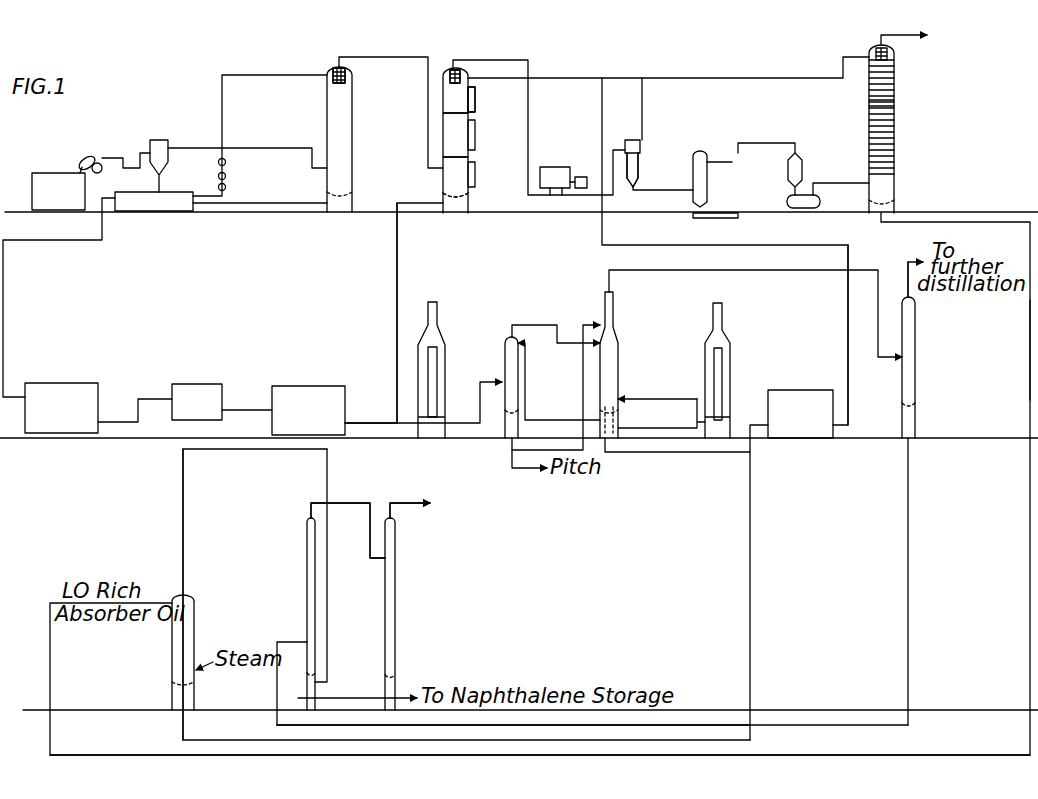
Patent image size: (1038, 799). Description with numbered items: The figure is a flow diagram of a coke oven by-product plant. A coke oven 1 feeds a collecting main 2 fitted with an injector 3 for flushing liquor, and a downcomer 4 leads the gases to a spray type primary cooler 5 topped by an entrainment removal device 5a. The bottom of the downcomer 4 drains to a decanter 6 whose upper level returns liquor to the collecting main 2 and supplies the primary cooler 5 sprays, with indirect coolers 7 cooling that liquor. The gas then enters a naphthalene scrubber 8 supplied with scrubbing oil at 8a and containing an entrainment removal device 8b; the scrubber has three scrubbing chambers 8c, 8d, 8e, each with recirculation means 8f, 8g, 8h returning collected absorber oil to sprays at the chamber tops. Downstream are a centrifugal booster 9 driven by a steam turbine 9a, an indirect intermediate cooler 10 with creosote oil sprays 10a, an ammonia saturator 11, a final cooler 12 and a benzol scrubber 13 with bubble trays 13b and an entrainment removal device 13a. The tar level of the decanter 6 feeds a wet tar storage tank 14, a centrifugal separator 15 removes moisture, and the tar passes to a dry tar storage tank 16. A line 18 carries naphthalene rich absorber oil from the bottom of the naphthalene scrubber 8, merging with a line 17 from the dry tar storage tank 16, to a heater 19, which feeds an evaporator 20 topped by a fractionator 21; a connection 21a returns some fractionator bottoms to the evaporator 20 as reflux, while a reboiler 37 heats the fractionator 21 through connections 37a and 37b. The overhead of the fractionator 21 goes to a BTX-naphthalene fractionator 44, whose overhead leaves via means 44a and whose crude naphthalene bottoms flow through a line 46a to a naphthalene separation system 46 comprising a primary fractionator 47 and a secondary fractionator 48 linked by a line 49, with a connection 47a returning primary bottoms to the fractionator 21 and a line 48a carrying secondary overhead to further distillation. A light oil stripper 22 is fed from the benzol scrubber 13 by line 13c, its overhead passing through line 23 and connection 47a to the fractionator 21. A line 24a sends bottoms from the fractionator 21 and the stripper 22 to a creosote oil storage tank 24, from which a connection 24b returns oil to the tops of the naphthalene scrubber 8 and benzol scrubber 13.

The coke oven 1 is at (58, 191).
The collecting main 2 is at (82, 161).
The injector 3 is at (100, 163).
The downcomer 4 is at (151, 150).
The primary cooler 5 is at (352, 113).
The entrainment removal device 5a is at (345, 68).
The decanter 6 is at (168, 192).
The indirect coolers 7 is at (228, 158).
The naphthalene scrubber 8 is at (446, 68).
The source of scrubbing oil 8a is at (472, 90).
The entrainment removal device 8b is at (462, 72).
The scrubbing chamber 8c is at (443, 105).
The scrubbing chamber 8d is at (443, 133).
The scrubbing chamber 8e is at (443, 178).
The recirculation means 8f is at (475, 108).
The recirculation means 8g is at (475, 138).
The recirculation means 8h is at (475, 167).
The booster 9 is at (556, 167).
The steam turbine 9a is at (581, 177).
The intermediate cooler 10 is at (640, 162).
The creosote oil sprays 10a is at (627, 165).
The ammonia saturator 11 is at (711, 196).
The final cooler 12 is at (802, 172).
The benzol scrubber 13 is at (896, 63).
The entrainment removal device 13a is at (876, 50).
The bubble trays 13b is at (888, 120).
The line 13c is at (1028, 347).
The wet tar storage tank 14 is at (61, 408).
The centrifugal separator 15 is at (197, 402).
The dry tar storage tank 16 is at (308, 410).
The line 17 is at (380, 422).
The line 18 is at (399, 291).
The heater 19 is at (440, 328).
The evaporator 20 is at (505, 362).
The fractionator 21 is at (618, 372).
The connection 21a is at (527, 390).
The light oil stripper 22 is at (196, 633).
The line 23 is at (183, 515).
The creosote oil storage tank 24 is at (800, 414).
The line 24a is at (752, 420).
The connection 24b is at (847, 298).
The reboiler 37 is at (724, 333).
The connection 37a is at (694, 427).
The connection 37b is at (694, 398).
The BTX-naphthalene fractionator 44 is at (916, 346).
The means for sending overhead 44a is at (908, 268).
The naphthalene separation system 46 is at (365, 726).
The line 46a is at (540, 744).
The primary fractionator 47 is at (307, 572).
The connection 47a is at (328, 578).
The secondary fractionator 48 is at (396, 630).
The line 48a is at (432, 505).
The line 49 is at (345, 497).